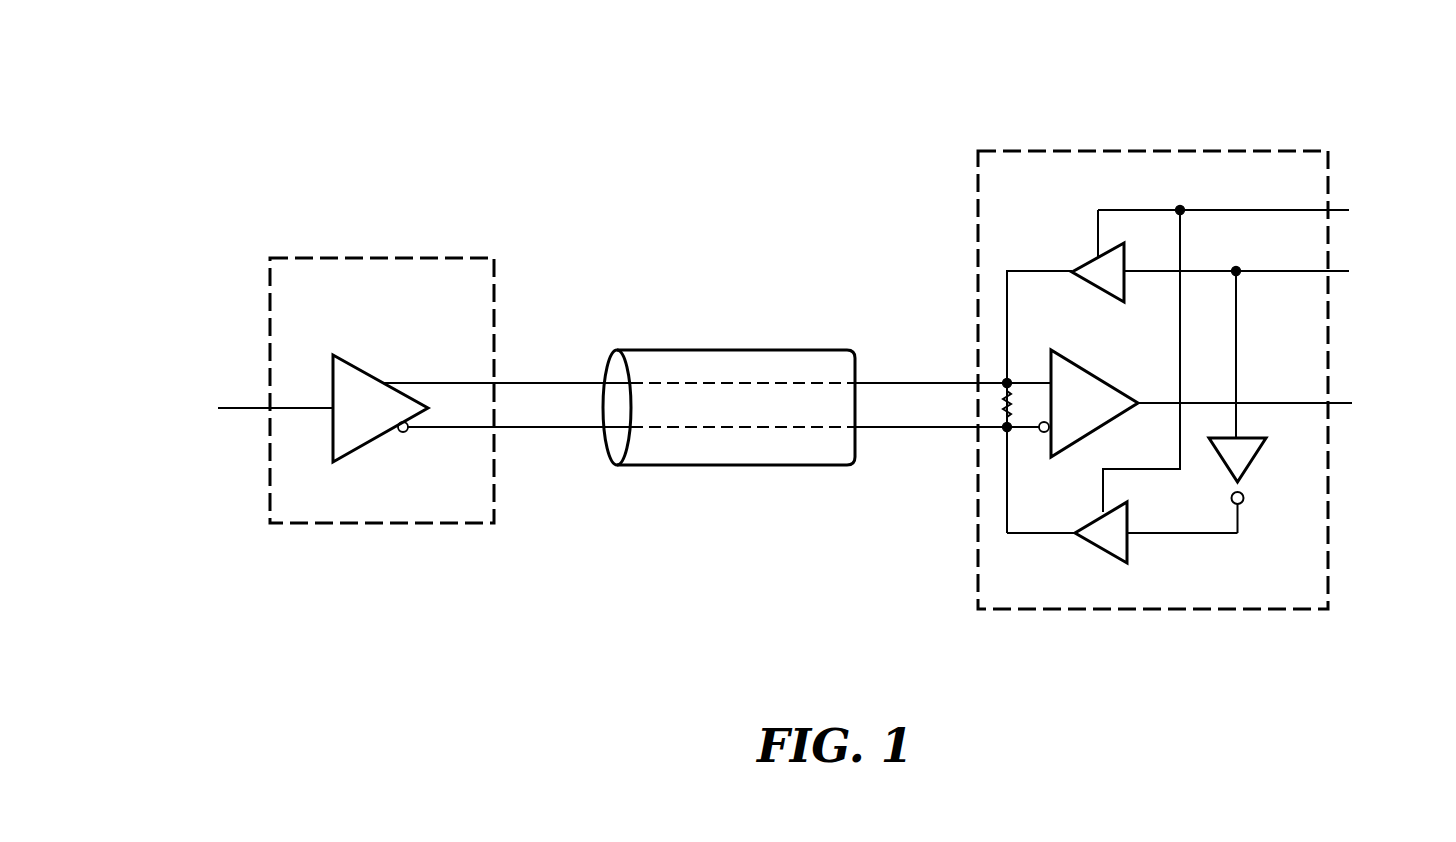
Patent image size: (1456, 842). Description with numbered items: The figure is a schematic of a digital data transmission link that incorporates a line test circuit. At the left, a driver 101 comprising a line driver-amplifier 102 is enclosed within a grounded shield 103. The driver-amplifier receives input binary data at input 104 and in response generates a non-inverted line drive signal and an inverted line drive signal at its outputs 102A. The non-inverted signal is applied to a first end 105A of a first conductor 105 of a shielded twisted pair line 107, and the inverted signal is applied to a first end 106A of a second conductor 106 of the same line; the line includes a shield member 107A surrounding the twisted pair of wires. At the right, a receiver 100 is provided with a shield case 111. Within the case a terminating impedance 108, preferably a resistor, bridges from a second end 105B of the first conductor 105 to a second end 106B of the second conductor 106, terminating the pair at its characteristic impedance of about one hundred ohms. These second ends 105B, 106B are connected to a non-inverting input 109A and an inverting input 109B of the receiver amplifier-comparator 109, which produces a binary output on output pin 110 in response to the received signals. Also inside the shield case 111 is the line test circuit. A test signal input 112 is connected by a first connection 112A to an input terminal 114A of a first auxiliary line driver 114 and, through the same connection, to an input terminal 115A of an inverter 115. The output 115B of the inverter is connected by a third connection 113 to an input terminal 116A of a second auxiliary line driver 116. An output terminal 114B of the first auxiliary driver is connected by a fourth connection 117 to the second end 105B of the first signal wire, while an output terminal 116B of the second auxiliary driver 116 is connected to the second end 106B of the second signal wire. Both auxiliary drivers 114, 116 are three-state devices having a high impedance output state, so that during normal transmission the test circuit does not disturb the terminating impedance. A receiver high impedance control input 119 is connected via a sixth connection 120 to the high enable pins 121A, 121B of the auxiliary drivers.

The receiver 100 is at (1015, 98).
The driver 101 is at (240, 229).
The line driver-amplifier 102 is at (347, 362).
The driver outputs 102A is at (383, 380).
The grounded shield 103 is at (440, 258).
The input 104 is at (194, 392).
The first conductor 105 is at (522, 383).
The first end of the first conductor 105A is at (410, 383).
The second end of the first conductor 105B is at (1018, 378).
The second conductor 106 is at (512, 427).
The first end of the second conductor 106A is at (475, 428).
The second end of the second conductor 106B is at (1032, 430).
The shielded twisted pair line 107 is at (729, 404).
The shield member 107A is at (733, 465).
The terminating impedance 108 is at (1004, 408).
The receiver amplifier-comparator 109 is at (1097, 371).
The non-inverting input 109A is at (1044, 378).
The inverting input 109B is at (1050, 440).
The output pin 110 is at (1370, 385).
The shield case 111 is at (1262, 151).
The test signal input 112 is at (1380, 258).
The first connection 112A is at (1210, 270).
The third connection 113 is at (1190, 533).
The first auxiliary line driver 114 is at (1093, 287).
The input terminal of the first auxiliary line driver 114A is at (1150, 270).
The output terminal of the first auxiliary line driver 114B is at (1072, 269).
The inverter 115 is at (1257, 460).
The input terminal of the inverter 115A is at (1237, 433).
The output of the inverter 115B is at (1247, 503).
The second auxiliary line driver 116 is at (1128, 545).
The input terminal of the second auxiliary line driver 116A is at (1130, 527).
The output terminal of the second auxiliary line driver 116B is at (1075, 537).
The fourth connection 117 is at (1050, 270).
The receiver high impedance control input 119 is at (1380, 196).
The sixth connection 120 is at (1141, 361).
The high enable pin of the first auxiliary driver 121A is at (1097, 253).
The high enable pin of the second auxiliary driver 121B is at (1103, 512).